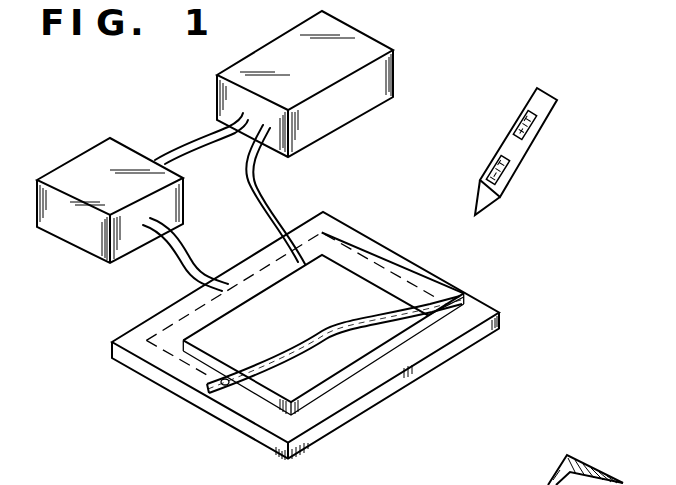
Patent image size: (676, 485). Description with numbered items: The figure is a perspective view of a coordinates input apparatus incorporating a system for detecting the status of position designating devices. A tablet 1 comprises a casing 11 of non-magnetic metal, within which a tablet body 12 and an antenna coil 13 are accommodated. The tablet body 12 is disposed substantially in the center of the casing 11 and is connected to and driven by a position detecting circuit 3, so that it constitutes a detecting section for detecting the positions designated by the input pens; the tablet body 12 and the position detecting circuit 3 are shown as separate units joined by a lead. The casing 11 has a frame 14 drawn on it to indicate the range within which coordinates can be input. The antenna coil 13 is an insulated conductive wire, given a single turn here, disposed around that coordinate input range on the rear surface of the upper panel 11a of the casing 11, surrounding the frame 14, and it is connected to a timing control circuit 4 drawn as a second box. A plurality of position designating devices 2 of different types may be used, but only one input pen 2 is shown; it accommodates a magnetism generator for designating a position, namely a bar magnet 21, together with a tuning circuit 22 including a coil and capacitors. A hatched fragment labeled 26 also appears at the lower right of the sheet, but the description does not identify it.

The tablet 1 is at (502, 318).
The casing 11 is at (114, 345).
The upper panel 11a is at (265, 393).
The tablet body 12 is at (305, 402).
The antenna coil 13 is at (385, 366).
The frame 14 is at (250, 368).
The position designating device 2 is at (491, 145).
The bar magnet 21 is at (490, 168).
The tuning circuit 22 is at (513, 128).
The position detecting circuit 3 is at (382, 41).
The timing control circuit 4 is at (80, 155).
The hatched member 26 is at (600, 476).